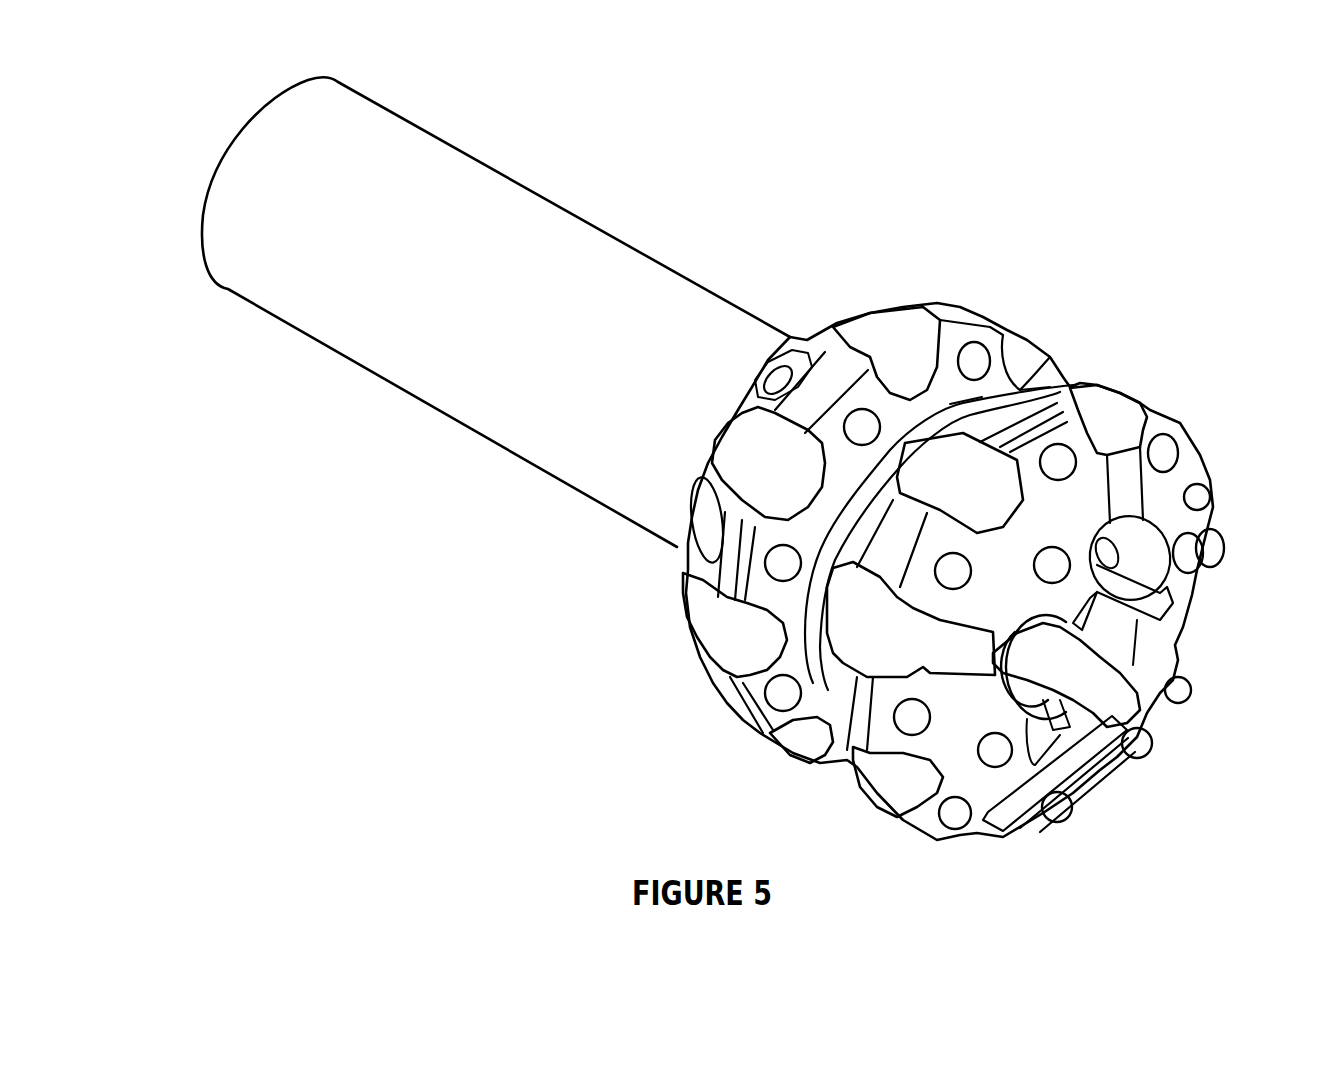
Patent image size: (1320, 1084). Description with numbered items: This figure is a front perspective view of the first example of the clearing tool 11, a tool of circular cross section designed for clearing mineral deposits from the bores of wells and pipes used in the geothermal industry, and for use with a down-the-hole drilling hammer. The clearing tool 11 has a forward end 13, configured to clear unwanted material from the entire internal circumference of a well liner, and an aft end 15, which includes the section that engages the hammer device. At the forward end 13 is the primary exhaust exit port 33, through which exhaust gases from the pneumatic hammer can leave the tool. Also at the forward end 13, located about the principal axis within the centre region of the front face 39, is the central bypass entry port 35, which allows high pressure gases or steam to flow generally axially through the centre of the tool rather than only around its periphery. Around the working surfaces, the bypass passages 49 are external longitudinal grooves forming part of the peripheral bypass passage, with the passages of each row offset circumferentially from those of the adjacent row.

The clearing tool 11 is at (822, 189).
The forward end 13 is at (1184, 861).
The aft end 15 is at (188, 229).
The primary exhaust exit port 33 is at (1142, 712).
The central bypass entry port 35 is at (1112, 684).
The front face 39 is at (1175, 518).
The bypass passage 49 is at (1110, 428).